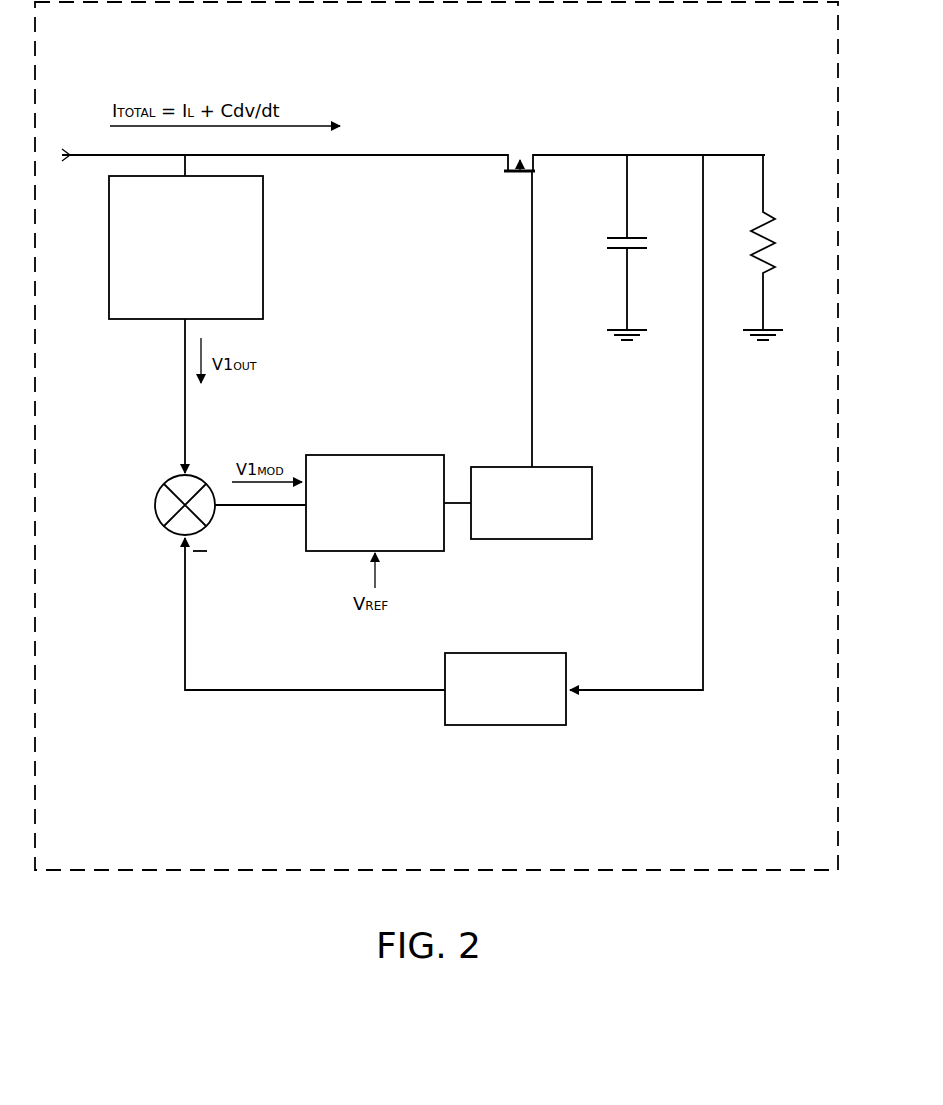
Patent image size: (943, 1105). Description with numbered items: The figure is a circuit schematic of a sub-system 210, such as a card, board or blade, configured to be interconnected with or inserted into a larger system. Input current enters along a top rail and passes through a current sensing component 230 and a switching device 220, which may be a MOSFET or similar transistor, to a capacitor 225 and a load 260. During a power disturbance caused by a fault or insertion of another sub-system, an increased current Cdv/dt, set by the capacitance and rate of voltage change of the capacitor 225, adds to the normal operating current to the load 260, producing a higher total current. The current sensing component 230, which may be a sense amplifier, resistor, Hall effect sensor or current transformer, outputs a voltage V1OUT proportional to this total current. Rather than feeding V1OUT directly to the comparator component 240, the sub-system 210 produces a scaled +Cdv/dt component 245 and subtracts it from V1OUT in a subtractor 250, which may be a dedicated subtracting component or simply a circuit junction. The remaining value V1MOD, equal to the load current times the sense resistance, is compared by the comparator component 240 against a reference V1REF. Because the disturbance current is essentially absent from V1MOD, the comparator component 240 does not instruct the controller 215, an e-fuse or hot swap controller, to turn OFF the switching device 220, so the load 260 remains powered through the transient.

The sub-system 210 is at (813, 47).
The controller 215 is at (513, 527).
The switching device 220 is at (500, 143).
The capacitor 225 is at (600, 245).
The current sensing component 230 is at (168, 300).
The comparator component 240 is at (357, 540).
The scaled +Cdv/dt component 245 is at (487, 713).
The subtractor 250 is at (137, 494).
The load 260 is at (782, 246).